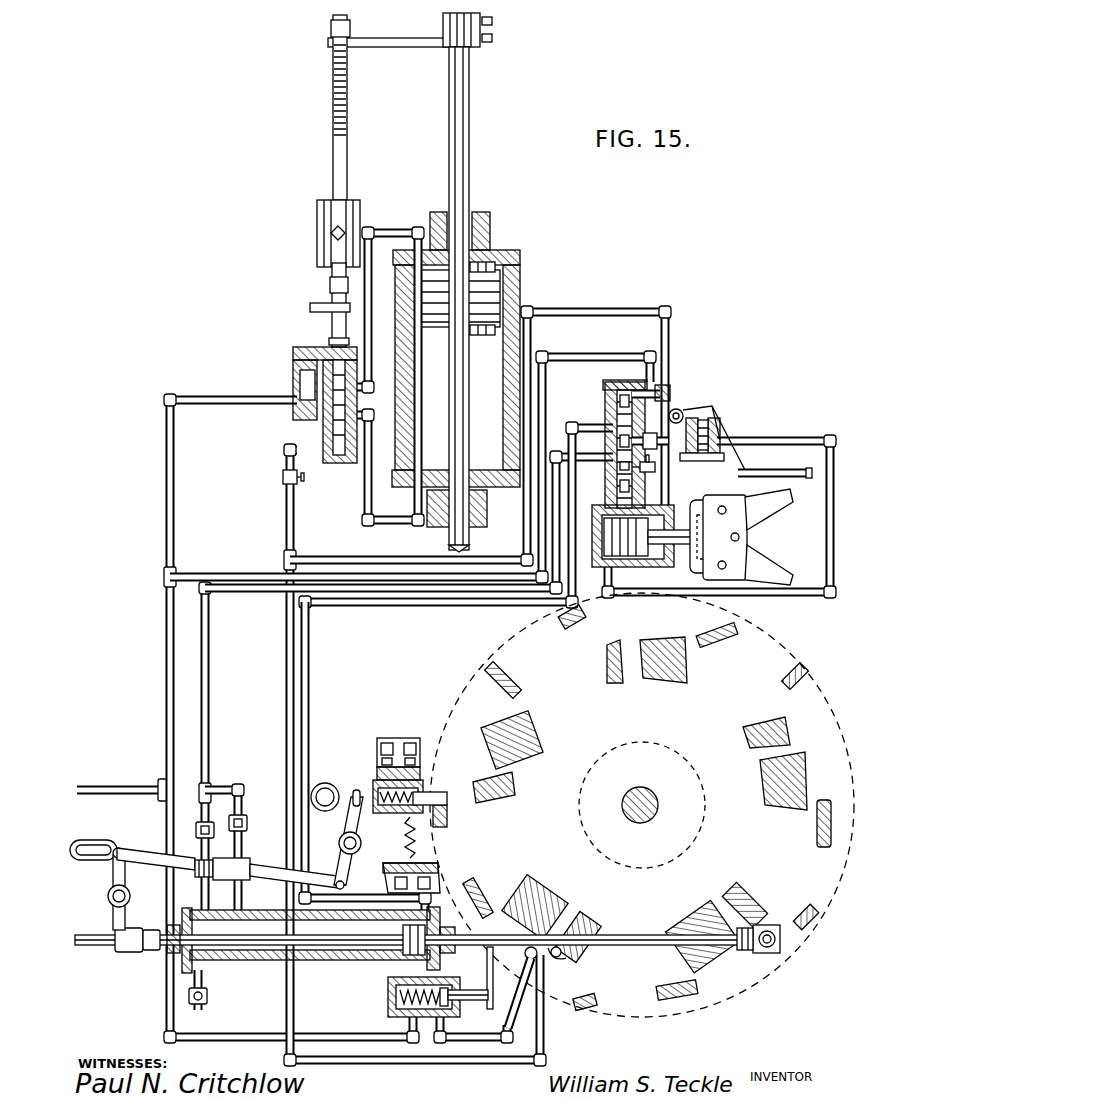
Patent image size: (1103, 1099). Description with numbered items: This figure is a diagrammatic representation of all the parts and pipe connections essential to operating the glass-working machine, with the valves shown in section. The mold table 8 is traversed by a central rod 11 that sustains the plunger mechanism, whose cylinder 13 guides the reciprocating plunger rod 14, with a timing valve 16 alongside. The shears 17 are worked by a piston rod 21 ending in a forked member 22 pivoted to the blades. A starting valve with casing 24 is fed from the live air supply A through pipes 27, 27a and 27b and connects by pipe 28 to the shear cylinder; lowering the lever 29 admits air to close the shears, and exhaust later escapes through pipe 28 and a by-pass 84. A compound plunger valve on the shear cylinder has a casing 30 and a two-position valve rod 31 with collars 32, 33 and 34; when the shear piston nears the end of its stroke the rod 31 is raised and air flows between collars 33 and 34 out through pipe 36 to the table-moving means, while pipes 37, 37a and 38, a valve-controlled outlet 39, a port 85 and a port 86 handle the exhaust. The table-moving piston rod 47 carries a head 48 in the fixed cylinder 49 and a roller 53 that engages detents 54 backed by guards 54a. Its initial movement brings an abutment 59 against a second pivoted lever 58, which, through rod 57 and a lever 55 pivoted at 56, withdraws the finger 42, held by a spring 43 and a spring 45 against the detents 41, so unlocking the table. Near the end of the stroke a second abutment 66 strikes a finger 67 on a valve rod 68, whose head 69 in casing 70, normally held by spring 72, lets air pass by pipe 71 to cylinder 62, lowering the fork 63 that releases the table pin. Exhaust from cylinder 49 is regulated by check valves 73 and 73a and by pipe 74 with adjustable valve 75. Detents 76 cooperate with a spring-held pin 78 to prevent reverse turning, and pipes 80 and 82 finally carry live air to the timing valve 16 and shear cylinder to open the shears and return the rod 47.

The live air supply A is at (103, 785).
The mold table 8 is at (628, 1012).
The rod 11 is at (650, 790).
The cylinder 13 is at (521, 292).
The plunger rod 14 is at (471, 152).
The timing valve 16 is at (320, 430).
The shears 17 is at (760, 530).
The piston rod 21 is at (666, 530).
The forked member 22 is at (662, 568).
The casing 24 is at (712, 500).
The pipe 27 is at (650, 440).
The pipe 27a is at (578, 350).
The pipe 27b is at (165, 822).
The pipe 28 is at (829, 518).
The lever 29 is at (780, 472).
The casing 30 is at (628, 380).
The valve rod 31 is at (605, 390).
The collar 32 is at (618, 405).
The collar 33 is at (598, 457).
The collar 34 is at (617, 482).
The pipe 36 is at (592, 424).
The pipe 37 is at (200, 888).
The by-pass pipe 37a is at (222, 793).
The pipe 38 is at (650, 390).
The valve-controlled outlet 39 is at (648, 472).
The detents 41 is at (585, 620).
The finger 42 is at (440, 793).
The spring 43 is at (376, 772).
The spring 45 is at (400, 840).
The piston rod 47 is at (630, 934).
The head 48 is at (408, 950).
The cylinder 49 is at (322, 962).
The roller 53 is at (770, 950).
The detents 54 is at (662, 676).
The guards 54a is at (605, 680).
The lever 55 is at (338, 862).
The pivot 56 is at (339, 840).
The rod 57 is at (150, 862).
The second pivoted lever 58 is at (112, 878).
The abutment 59 is at (132, 950).
The cylinder 62 is at (538, 958).
The fork 63 is at (566, 958).
The second abutment 66 is at (690, 920).
The finger 67 is at (487, 965).
The valve rod 68 is at (484, 1000).
The head 69 is at (437, 1020).
The casing 70 is at (388, 1013).
The pipe 71 is at (490, 1042).
The spring 72 is at (403, 1020).
The check valve 73 is at (218, 834).
The check valve 73a is at (248, 826).
The pipe 74 is at (205, 980).
The adjustable valve 75 is at (208, 998).
The detents 76 is at (515, 672).
The pin 78 is at (824, 800).
The pipe 80 is at (287, 515).
The pipe 82 is at (331, 559).
The by-pass 84 is at (705, 416).
The port 85 is at (640, 568).
The port 86 is at (640, 420).